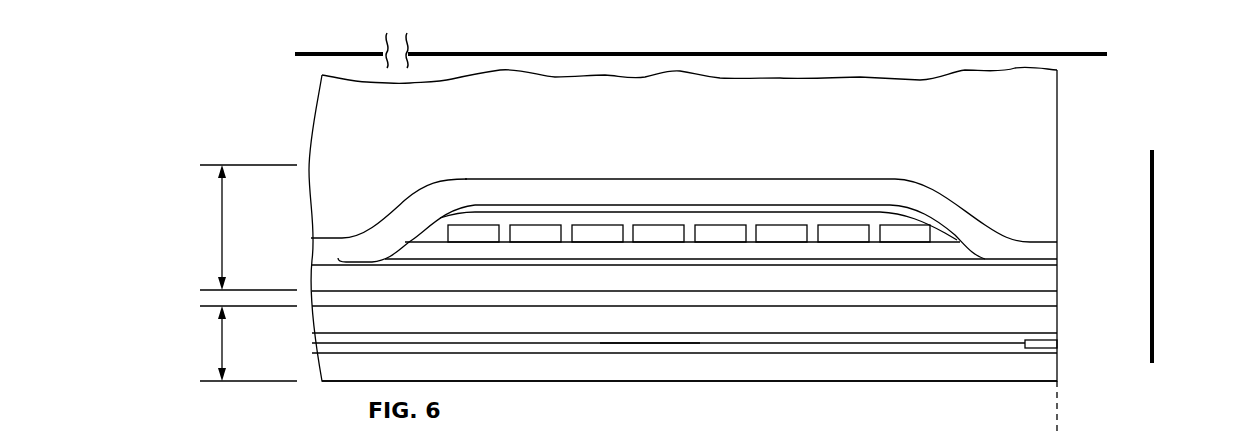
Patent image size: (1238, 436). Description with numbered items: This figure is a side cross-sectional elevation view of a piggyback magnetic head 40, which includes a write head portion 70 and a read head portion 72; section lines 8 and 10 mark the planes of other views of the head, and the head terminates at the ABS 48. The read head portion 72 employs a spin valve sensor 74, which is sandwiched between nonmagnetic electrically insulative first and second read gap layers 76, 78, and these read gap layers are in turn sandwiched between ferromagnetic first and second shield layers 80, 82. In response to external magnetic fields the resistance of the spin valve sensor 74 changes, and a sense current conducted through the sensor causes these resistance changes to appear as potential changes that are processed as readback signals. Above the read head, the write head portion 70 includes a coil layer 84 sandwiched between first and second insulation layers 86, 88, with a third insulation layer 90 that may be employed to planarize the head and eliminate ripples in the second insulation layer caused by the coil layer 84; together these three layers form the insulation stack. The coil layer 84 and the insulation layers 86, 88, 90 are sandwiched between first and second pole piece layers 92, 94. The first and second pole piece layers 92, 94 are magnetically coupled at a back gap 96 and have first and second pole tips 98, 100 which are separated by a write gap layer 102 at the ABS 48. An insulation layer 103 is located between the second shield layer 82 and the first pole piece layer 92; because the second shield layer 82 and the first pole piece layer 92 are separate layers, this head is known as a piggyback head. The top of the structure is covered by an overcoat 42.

The section line 8- 8 is at (1170, 352).
The section line 10- 10 is at (303, 8).
The piggyback magnetic head 40 is at (280, 75).
The overcoat layer 42 is at (1037, 100).
The ABS 48 is at (1058, 403).
The write head portion 70 is at (222, 228).
The read head portion 72 is at (222, 342).
The spin valve sensor 74 is at (1055, 344).
The first read gap layer 76 is at (687, 353).
The second read gap layer 78 is at (630, 333).
The first shield layer 80 is at (793, 372).
The second shield layer 82 is at (902, 320).
The coil layer 84 is at (723, 233).
The first insulation layer 86 is at (547, 252).
The second insulation layer 88 is at (945, 238).
The third insulation layer 90 is at (473, 210).
The first pole piece layer 92 is at (967, 282).
The second pole piece layer 94 is at (828, 182).
The back gap 96 is at (338, 258).
The first pole tip 98 is at (1057, 281).
The second pole tip 100 is at (1050, 248).
The write gap layer 102 is at (1053, 265).
The insulation layer 103 is at (845, 298).